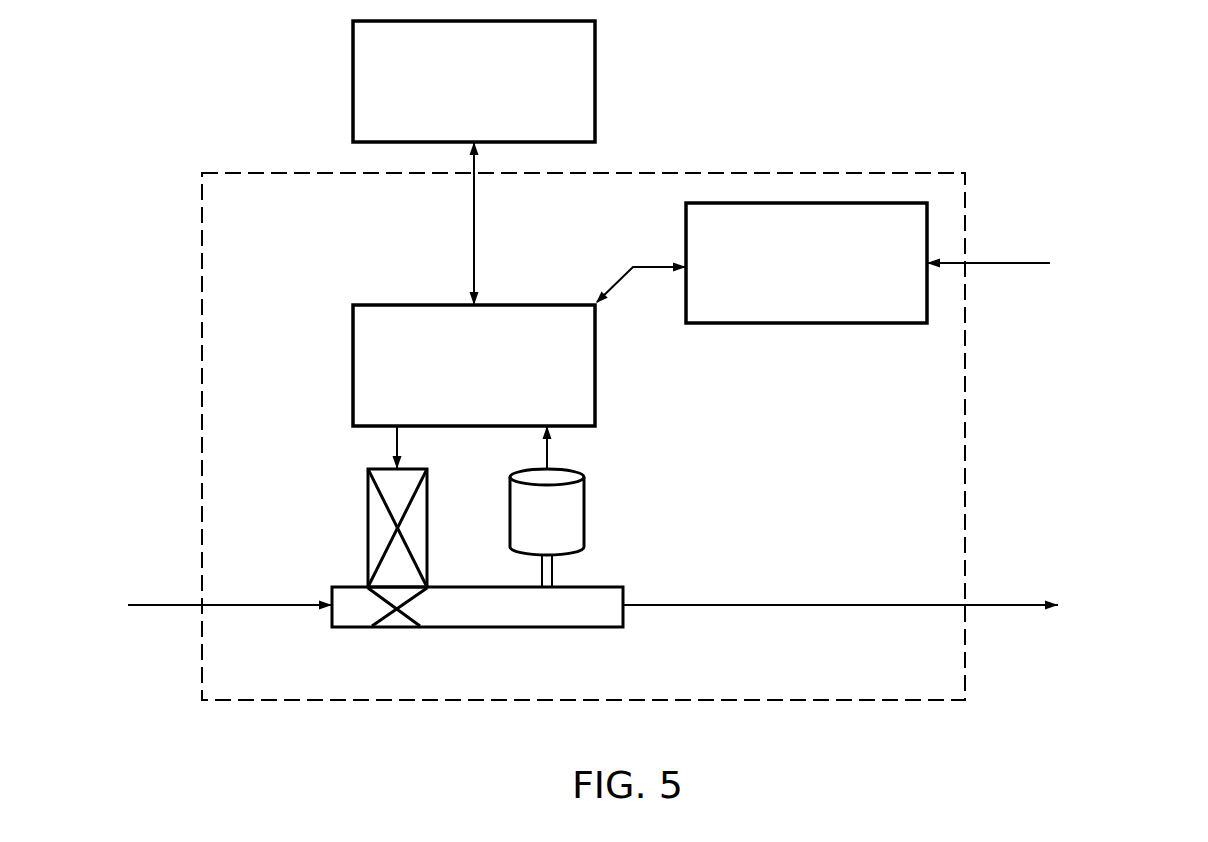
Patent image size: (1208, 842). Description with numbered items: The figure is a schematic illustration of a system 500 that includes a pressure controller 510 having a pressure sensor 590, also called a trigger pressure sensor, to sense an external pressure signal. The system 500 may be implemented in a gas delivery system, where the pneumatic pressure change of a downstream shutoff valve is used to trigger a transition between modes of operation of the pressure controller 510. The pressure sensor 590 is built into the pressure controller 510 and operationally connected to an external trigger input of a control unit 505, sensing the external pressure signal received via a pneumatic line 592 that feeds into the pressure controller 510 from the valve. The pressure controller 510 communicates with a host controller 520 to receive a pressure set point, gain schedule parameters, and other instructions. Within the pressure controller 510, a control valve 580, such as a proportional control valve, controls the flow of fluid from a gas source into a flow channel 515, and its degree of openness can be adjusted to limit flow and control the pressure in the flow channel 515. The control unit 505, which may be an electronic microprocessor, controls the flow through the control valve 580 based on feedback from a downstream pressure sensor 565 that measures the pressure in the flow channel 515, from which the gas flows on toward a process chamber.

The system 500 is at (1037, 115).
The pressure controller 510 is at (829, 170).
The host controller 520 is at (455, 123).
The control unit 505 is at (455, 408).
The pressure sensor 590 is at (787, 305).
The pneumatic line 592 is at (1010, 262).
The control valve 580 is at (366, 511).
The downstream pressure sensor 565 is at (588, 509).
The flow channel 515 is at (503, 606).